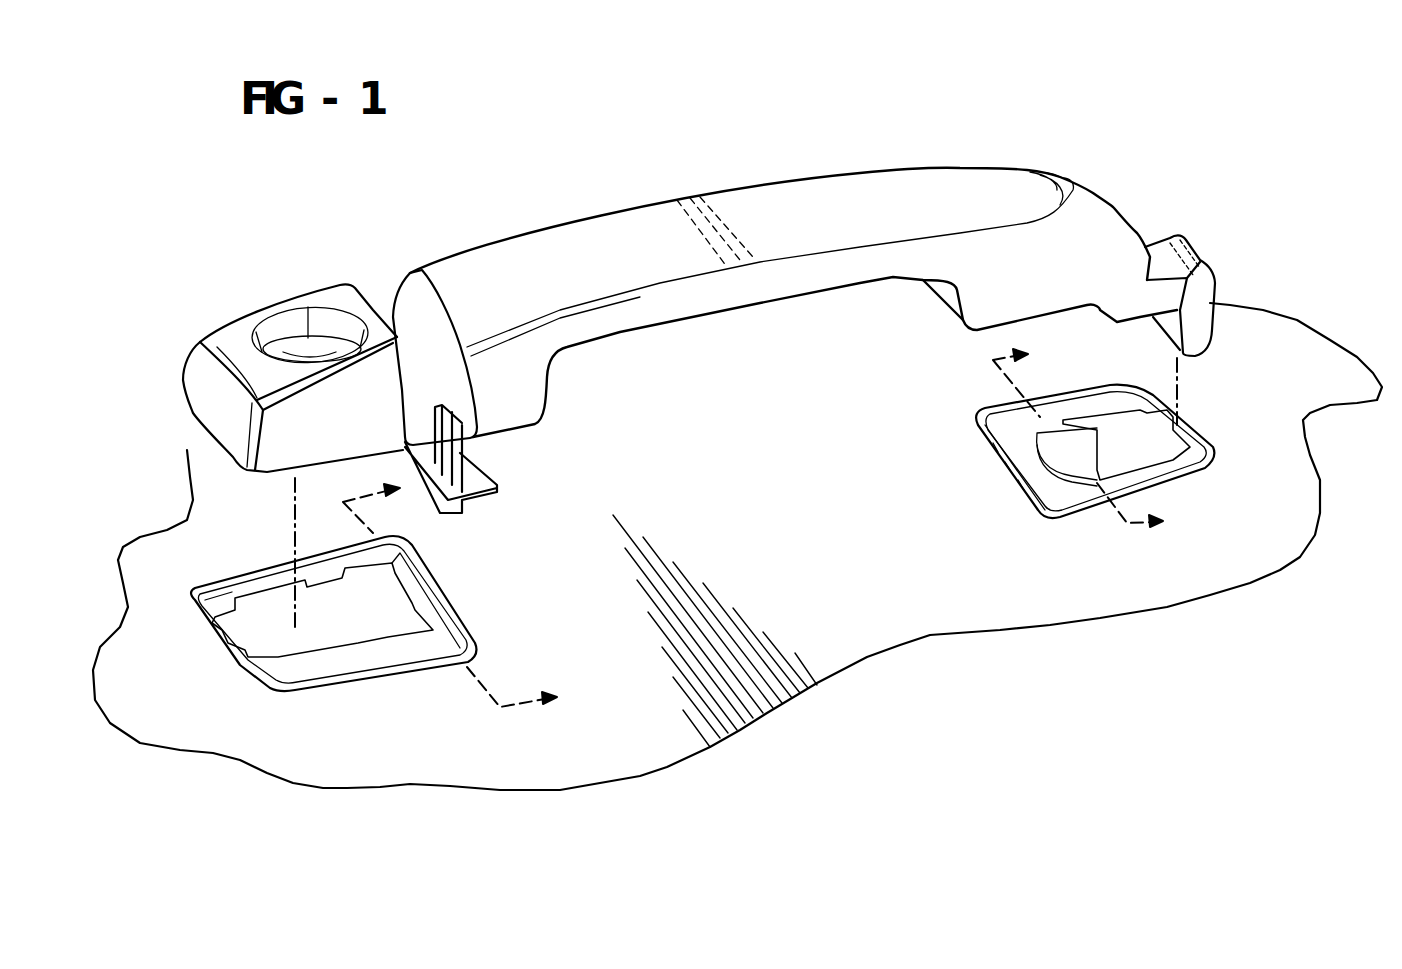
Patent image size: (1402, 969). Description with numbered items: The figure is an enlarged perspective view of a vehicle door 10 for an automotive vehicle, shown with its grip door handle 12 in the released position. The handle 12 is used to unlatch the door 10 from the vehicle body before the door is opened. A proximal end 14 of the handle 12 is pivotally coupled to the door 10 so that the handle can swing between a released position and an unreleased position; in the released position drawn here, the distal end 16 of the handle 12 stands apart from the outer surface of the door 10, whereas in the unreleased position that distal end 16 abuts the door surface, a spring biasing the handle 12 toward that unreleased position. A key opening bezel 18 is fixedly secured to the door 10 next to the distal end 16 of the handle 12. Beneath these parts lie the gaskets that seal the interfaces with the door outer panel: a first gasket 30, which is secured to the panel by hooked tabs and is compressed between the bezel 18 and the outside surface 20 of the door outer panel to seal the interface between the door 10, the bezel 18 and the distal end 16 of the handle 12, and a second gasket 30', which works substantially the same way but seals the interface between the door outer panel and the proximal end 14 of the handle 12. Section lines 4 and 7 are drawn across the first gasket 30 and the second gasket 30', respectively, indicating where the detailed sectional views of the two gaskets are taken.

The vehicle door 10 is at (744, 419).
The grip door handle 12 is at (838, 197).
The proximal end 14 is at (1110, 203).
The distal end 16 is at (485, 263).
The key opening bezel 18 is at (332, 294).
The outside surface 20 is at (1272, 350).
The first gasket 30 is at (333, 638).
The second gasket 30' is at (1123, 473).
The section line 4- 4 is at (453, 605).
The section line 7- 7 is at (1085, 455).